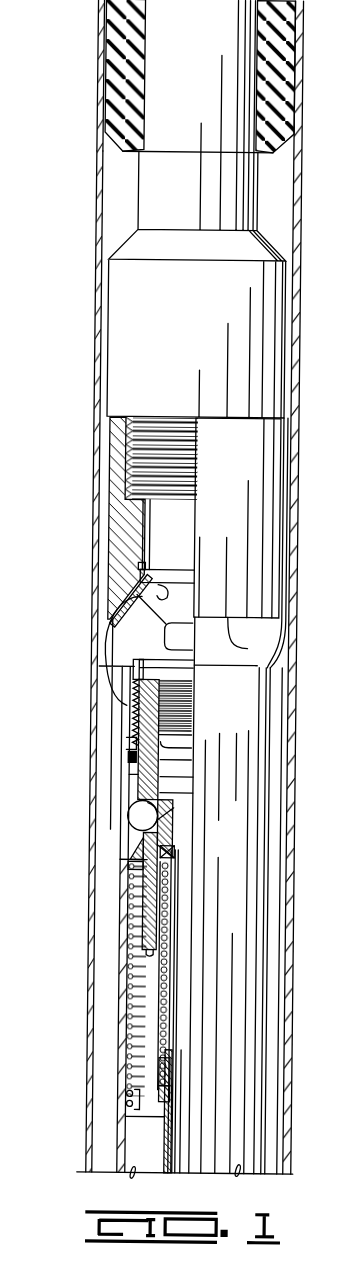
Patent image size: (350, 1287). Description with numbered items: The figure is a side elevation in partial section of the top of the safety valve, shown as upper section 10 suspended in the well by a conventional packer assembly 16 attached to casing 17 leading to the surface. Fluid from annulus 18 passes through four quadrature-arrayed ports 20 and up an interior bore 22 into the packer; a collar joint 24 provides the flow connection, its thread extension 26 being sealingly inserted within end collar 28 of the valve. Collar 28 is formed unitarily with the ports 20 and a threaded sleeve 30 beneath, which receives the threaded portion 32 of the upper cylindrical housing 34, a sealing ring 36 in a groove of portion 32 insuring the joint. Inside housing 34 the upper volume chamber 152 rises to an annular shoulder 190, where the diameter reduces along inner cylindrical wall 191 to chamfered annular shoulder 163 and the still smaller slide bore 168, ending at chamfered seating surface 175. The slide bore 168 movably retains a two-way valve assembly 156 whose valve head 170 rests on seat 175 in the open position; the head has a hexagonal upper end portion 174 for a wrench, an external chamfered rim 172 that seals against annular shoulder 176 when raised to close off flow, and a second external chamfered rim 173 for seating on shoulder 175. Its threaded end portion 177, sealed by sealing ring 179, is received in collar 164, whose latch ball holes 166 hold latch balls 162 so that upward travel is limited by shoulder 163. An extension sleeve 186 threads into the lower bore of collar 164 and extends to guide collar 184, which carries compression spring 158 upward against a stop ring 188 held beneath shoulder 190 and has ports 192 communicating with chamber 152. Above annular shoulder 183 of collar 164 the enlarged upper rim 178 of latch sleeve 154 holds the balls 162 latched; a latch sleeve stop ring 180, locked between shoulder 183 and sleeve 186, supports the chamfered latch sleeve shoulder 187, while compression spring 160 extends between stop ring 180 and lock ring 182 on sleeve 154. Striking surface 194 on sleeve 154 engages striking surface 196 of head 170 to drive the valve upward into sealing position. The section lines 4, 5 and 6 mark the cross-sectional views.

The upper section 10 is at (308, 104).
The packer assembly 16 is at (271, 27).
The casing 17 is at (94, 48).
The annulus 18 is at (275, 1035).
The ports 20 is at (163, 602).
The interior bore 22 is at (156, 510).
The collar joint 24 is at (181, 301).
The thread extension 26 is at (188, 465).
The end collar 28 is at (113, 435).
The threaded sleeve 30 is at (128, 684).
The threaded portion 32 is at (135, 703).
The upper cylindrical housing 34 is at (126, 999).
The sealing ring 36 is at (130, 758).
The section line 4- 4 is at (67, 643).
The section line 5- 5 is at (69, 806).
The section line 6- 6 is at (70, 1108).
The upper volume chamber 152 is at (146, 1143).
The latch sleeve 154 is at (166, 1157).
The two-way valve assembly 156 is at (150, 905).
The compression spring 158 is at (145, 964).
The compression spring 160 is at (167, 1054).
The latch balls 162 is at (140, 815).
The chamfered annular shoulder 163 is at (140, 810).
The collar 164 is at (148, 776).
The latch ball holes 166 is at (140, 845).
The slide bore 168 is at (128, 743).
The valve head 170 is at (133, 652).
The external chamfered rim 172 is at (165, 637).
The external chamfered rim 173 is at (170, 683).
The hexagonal upper end portion 174 is at (130, 590).
The chamfered seating surface 175 is at (137, 673).
The annular shoulder 176 is at (139, 568).
The threaded end portion 177 is at (183, 712).
The enlarged upper rim 178 is at (172, 820).
The sealing ring 179 is at (183, 748).
The latch sleeve stop ring 180 is at (170, 862).
The lock ring 182 is at (170, 1090).
The annular shoulder 183 is at (173, 850).
The guide collar 184 is at (151, 1094).
The extension sleeve 186 is at (127, 1026).
The chamfered latch sleeve shoulder 187 is at (176, 837).
The stop ring 188 is at (108, 900).
The annular shoulder 190 is at (135, 862).
The inner cylindrical wall 191 is at (128, 832).
The ports 192 is at (141, 1101).
The striking surface 194 is at (165, 792).
The striking surface 196 is at (164, 770).